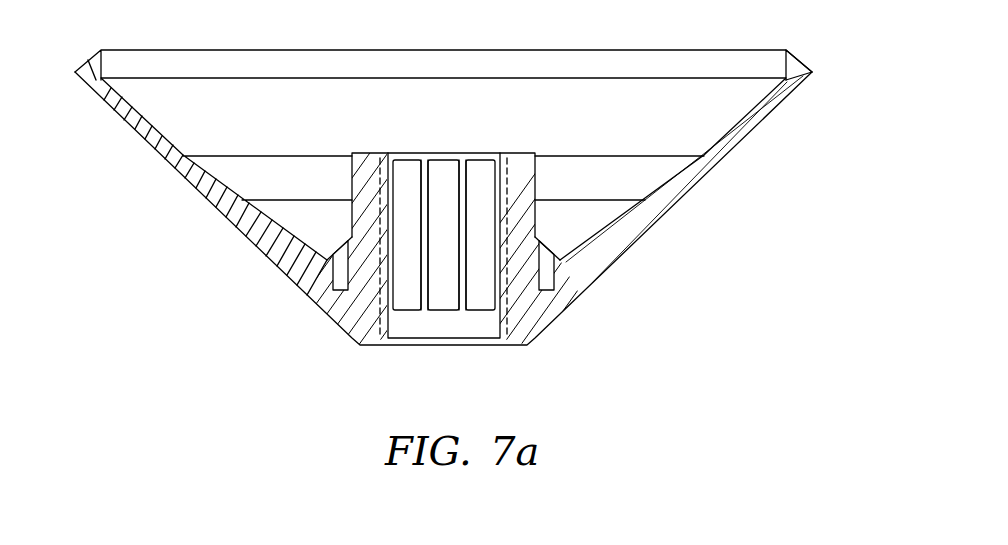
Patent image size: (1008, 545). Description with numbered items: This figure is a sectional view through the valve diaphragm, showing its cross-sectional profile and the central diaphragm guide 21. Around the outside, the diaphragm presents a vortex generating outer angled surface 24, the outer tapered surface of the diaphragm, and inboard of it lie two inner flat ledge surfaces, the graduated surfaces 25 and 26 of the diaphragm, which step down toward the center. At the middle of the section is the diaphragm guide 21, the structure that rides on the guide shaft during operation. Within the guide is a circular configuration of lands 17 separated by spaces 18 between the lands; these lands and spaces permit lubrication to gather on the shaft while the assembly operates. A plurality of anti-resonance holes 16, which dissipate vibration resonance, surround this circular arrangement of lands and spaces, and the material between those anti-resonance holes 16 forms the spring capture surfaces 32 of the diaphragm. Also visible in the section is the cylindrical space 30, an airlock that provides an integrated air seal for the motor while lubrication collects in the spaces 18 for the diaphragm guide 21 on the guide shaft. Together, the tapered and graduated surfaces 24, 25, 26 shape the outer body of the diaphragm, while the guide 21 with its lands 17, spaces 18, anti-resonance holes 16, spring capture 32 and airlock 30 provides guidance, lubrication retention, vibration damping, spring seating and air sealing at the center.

The anti-resonance holes 16 is at (333, 293).
The lands 17 is at (406, 150).
The spaces between lands 18 is at (428, 150).
The diaphragm guide 21 is at (358, 215).
The vortex generating outer angled surface of diaphragm 24 is at (801, 52).
The graduated surface of diaphragm 25 is at (709, 162).
The graduated surface of diaphragm 26 is at (650, 208).
The airlock 30 is at (461, 333).
The spring capture on diaphragm 32 is at (551, 236).